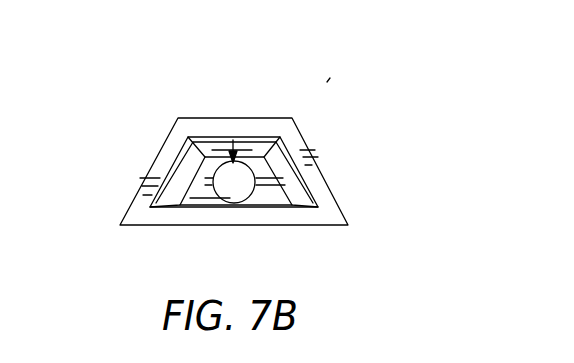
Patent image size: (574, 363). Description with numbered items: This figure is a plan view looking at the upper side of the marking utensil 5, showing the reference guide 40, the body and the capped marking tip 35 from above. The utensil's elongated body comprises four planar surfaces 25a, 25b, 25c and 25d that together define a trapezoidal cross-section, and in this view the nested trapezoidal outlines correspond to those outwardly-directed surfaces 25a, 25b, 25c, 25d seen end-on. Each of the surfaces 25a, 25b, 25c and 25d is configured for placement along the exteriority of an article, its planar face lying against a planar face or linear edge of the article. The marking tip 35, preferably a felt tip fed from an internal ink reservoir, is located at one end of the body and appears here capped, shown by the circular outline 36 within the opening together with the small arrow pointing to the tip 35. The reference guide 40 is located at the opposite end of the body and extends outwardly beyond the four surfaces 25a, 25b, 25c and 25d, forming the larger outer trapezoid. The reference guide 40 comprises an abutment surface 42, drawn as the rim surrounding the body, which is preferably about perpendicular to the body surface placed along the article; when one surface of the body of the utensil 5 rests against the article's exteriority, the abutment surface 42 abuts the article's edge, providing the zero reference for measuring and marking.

The marking utensil 5 is at (327, 82).
The planar surface 25a is at (180, 176).
The planar surface 25b is at (197, 208).
The planar surface 25c is at (240, 148).
The planar surface 25d is at (293, 178).
The marking tip 35 is at (233, 142).
The opening 36 is at (237, 196).
The reference guide 40 is at (340, 188).
The abutment surface 42 is at (292, 138).